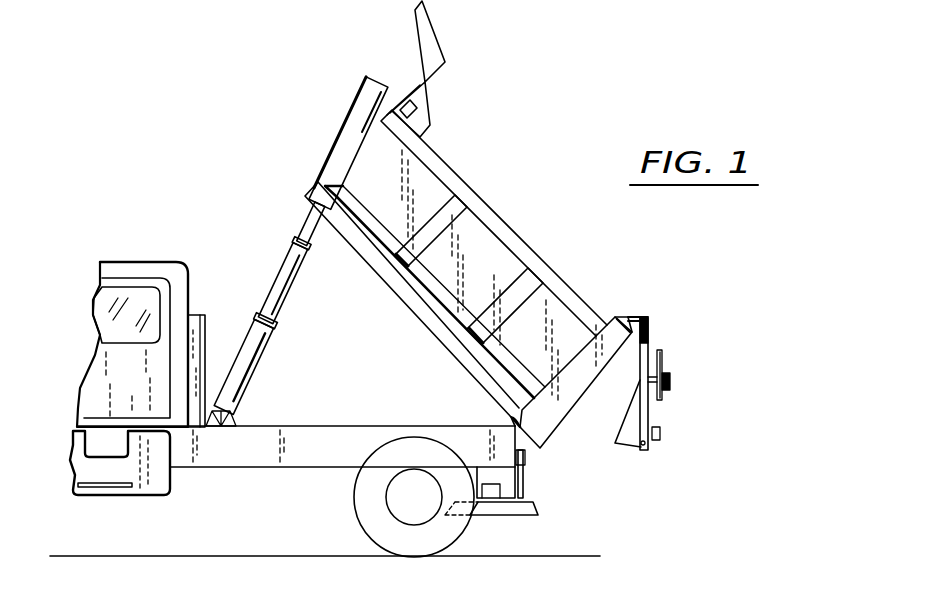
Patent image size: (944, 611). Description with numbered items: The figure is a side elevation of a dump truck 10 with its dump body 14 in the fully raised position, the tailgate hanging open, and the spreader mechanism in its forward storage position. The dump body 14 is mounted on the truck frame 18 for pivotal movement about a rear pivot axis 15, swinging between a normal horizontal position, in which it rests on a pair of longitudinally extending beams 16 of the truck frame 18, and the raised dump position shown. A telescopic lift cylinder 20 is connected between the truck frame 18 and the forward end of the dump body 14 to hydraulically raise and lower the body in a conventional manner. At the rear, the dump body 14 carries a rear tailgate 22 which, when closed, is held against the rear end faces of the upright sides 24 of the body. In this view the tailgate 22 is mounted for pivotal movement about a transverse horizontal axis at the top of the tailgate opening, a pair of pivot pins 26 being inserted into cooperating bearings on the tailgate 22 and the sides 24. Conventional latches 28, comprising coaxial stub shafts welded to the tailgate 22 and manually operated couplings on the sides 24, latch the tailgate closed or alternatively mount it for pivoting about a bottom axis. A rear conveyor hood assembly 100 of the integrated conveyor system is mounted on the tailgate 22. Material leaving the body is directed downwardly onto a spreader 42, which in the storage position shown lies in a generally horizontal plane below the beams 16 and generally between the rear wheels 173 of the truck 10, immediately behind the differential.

The dump truck 10 is at (246, 104).
The dump body 14 is at (490, 208).
The rear pivot axis 15 is at (504, 410).
The longitudinally extending beams 16 is at (328, 458).
The truck frame 18 is at (236, 464).
The telescopic lift cylinder 20 is at (283, 258).
The rear tailgate 22 is at (650, 344).
The upright sides 24 is at (579, 413).
The pivot pins 26 is at (621, 314).
The latches 28 is at (555, 424).
The spreader 42 is at (538, 502).
The rear conveyor hood assembly 100 is at (632, 427).
The rear wheels 173 is at (362, 517).